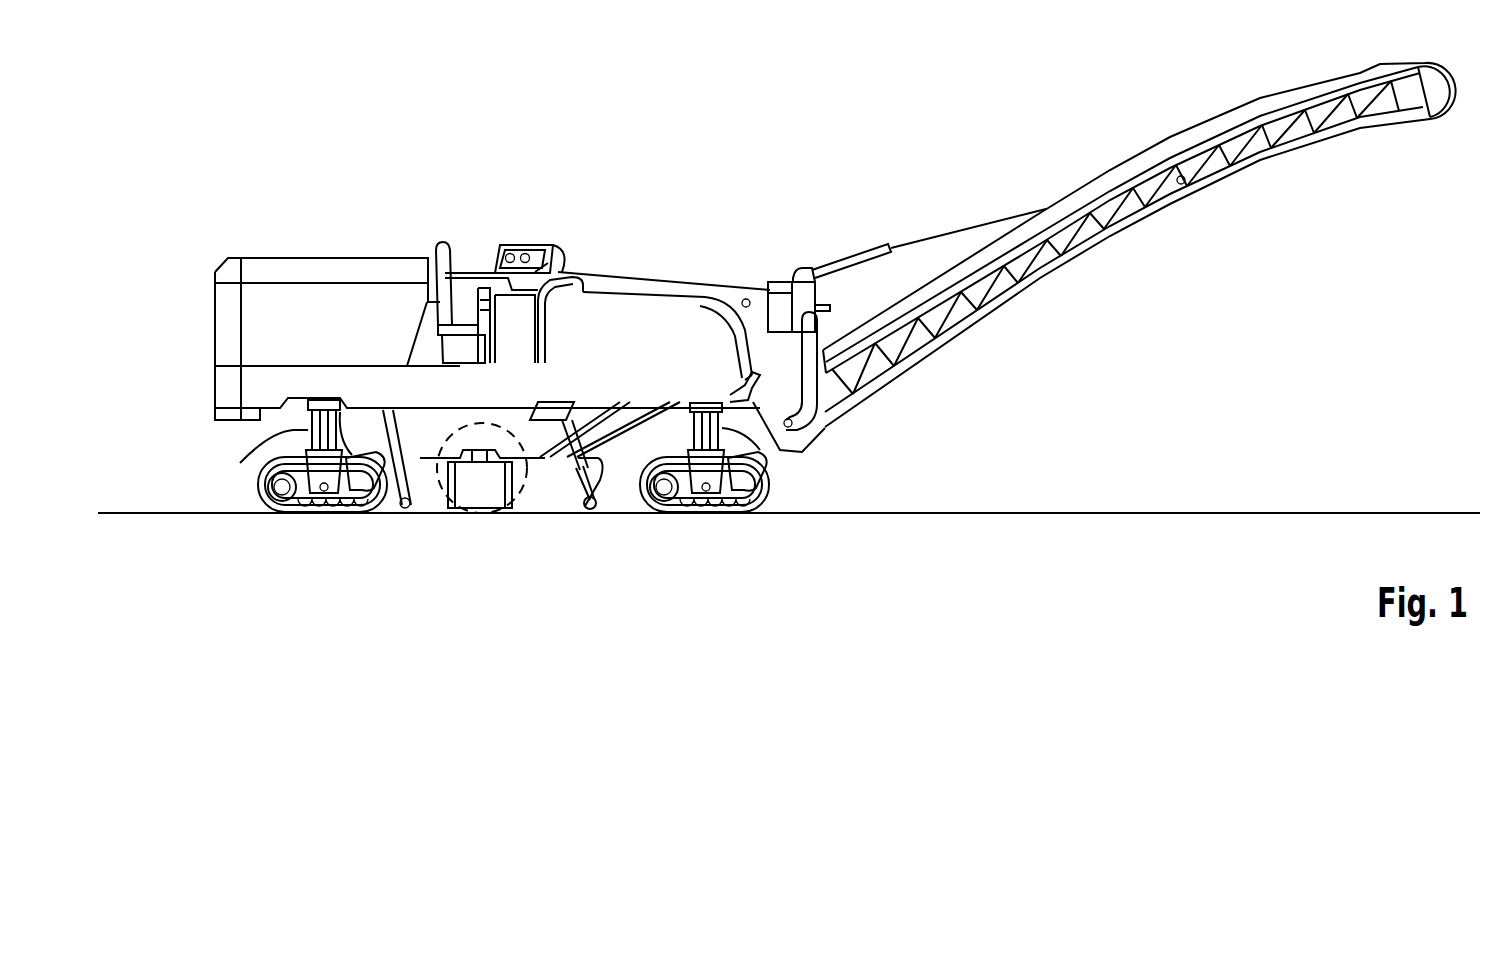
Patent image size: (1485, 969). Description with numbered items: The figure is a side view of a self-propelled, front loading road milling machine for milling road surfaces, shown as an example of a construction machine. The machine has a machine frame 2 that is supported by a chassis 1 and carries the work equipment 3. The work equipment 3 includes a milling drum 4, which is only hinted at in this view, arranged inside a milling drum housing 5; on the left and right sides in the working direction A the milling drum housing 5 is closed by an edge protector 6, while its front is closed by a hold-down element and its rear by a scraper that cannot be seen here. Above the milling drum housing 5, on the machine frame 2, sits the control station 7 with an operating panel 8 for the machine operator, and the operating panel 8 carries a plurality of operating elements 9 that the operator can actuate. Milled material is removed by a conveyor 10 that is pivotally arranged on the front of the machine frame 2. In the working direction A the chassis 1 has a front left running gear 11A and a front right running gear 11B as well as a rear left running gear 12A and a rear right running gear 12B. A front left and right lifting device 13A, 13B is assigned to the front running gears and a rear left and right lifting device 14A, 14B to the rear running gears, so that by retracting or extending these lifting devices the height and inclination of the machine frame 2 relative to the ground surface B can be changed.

The chassis 1 is at (781, 337).
The machine frame 2 is at (200, 316).
The work equipment 3 is at (470, 517).
The milling drum 4 is at (517, 500).
The milling drum housing 5 is at (370, 435).
The edge protector 6 is at (556, 498).
The control station 7 is at (465, 228).
The operating panel 8 is at (556, 232).
The operating elements 9 is at (513, 244).
The conveyor 10 is at (1114, 149).
The front left running gear 11A is at (780, 482).
The front right running gear 11B is at (766, 488).
The rear left running gear 12A is at (246, 482).
The rear right running gear 12B is at (266, 488).
The front left lifting device 13A is at (804, 448).
The front right lifting device 13B is at (724, 432).
The rear left lifting device 14A is at (224, 446).
The rear right lifting device 14B is at (305, 433).
The working direction A is at (560, 117).
The ground surface B is at (1148, 513).